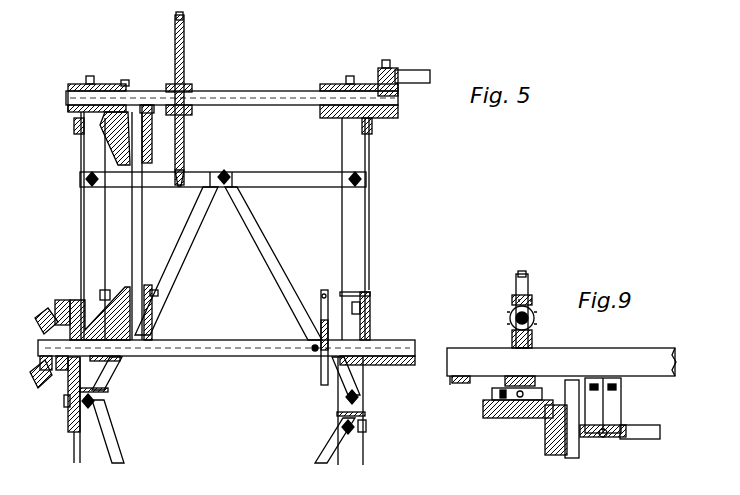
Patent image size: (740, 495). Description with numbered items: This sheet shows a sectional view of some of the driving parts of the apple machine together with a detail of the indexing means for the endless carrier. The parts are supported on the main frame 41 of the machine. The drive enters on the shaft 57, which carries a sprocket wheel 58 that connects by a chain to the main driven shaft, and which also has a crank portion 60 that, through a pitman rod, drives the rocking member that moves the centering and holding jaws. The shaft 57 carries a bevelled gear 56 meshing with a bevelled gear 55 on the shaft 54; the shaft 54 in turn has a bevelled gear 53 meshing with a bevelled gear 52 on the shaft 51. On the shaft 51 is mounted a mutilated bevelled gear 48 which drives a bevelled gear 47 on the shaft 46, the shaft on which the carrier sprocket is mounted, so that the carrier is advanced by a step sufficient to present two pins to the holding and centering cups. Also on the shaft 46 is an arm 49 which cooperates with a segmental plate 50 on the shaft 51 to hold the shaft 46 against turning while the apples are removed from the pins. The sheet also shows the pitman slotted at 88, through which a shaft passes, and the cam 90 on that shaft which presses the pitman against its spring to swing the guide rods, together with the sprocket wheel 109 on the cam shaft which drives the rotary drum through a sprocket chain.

In FIG. 5, the main frame 41 is at (90, 205).
In FIG. 9, the main frame 41 is at (490, 364).
In FIG. 9, the shaft 46 is at (652, 432).
In FIG. 9, the bevelled gear 47 is at (545, 438).
In FIG. 5, the mutilated bevelled gear 48 is at (50, 300).
In FIG. 9, the mutilated bevelled gear 48 is at (495, 412).
In FIG. 9, the arm 49 is at (590, 408).
In FIG. 9, the segmental plate 50 is at (566, 400).
In FIG. 5, the shaft 51 is at (208, 357).
In FIG. 9, the shaft 51 is at (516, 285).
In FIG. 5, the bevelled gear 52 is at (120, 358).
In FIG. 9, the bevelled gear 52 is at (512, 336).
In FIG. 5, the bevelled gear 53 is at (152, 335).
In FIG. 5, the shaft 54 is at (135, 232).
In FIG. 9, the shaft 54 is at (512, 300).
In FIG. 5, the bevelled gear 55 is at (147, 105).
In FIG. 9, the bevelled gear 55 is at (510, 318).
In FIG. 5, the bevelled gear 56 is at (124, 82).
In FIG. 5, the shaft 57 is at (222, 100).
In FIG. 5, the sprocket wheel 58 is at (183, 58).
In FIG. 5, the crank portion 60 is at (408, 78).
In FIG. 5, the slot 88 is at (388, 362).
In FIG. 5, the cam 90 is at (392, 330).
In FIG. 5, the sprocket wheel 109 is at (318, 370).